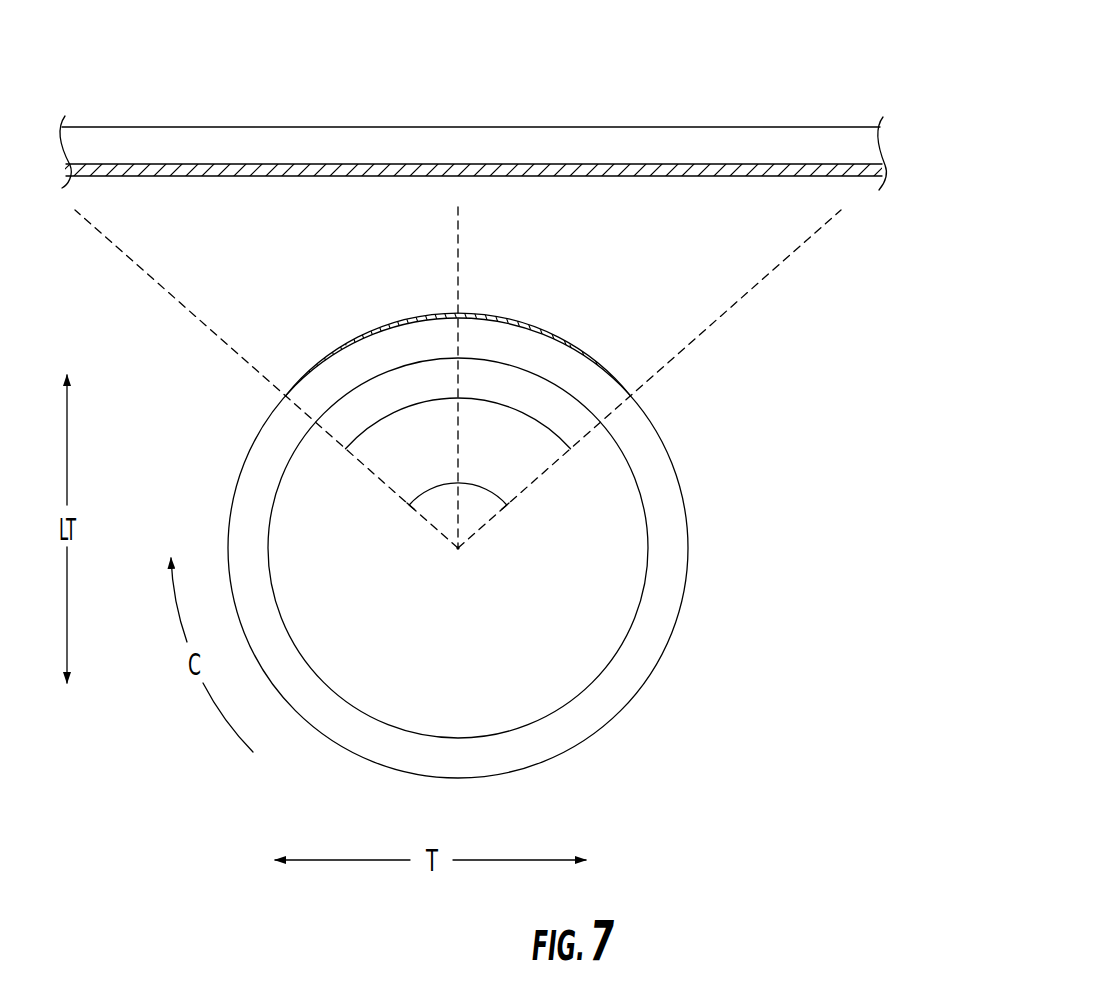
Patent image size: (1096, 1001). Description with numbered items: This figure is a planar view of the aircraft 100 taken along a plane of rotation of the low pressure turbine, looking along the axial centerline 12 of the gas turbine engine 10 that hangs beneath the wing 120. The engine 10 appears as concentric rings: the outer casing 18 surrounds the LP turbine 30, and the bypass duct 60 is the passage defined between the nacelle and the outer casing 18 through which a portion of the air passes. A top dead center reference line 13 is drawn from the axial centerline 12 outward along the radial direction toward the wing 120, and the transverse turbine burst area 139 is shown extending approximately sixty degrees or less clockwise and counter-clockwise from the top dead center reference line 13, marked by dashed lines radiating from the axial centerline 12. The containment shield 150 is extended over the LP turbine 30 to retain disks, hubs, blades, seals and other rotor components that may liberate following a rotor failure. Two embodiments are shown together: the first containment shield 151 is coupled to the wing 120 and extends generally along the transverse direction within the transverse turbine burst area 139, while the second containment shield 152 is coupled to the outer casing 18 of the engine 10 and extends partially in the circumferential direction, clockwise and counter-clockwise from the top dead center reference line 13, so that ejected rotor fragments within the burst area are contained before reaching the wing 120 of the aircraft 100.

The gas turbine engine 10 is at (750, 584).
The axial centerline 12 is at (459, 552).
The top dead center reference line 13 is at (456, 262).
The outer casing 18 is at (676, 475).
The LP turbine 30 is at (324, 660).
The bypass duct 60 is at (434, 486).
The aircraft 100 is at (692, 63).
The wing 120 is at (358, 138).
The transverse turbine burst area 139 is at (380, 418).
The containment shield 150 is at (535, 172).
The first containment shield 151 is at (681, 172).
The second containment shield 152 is at (581, 351).